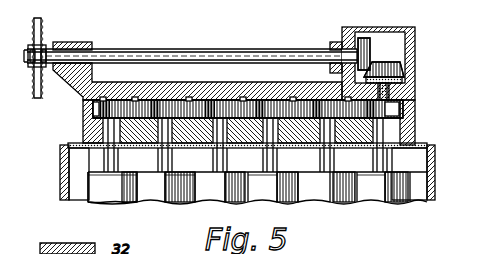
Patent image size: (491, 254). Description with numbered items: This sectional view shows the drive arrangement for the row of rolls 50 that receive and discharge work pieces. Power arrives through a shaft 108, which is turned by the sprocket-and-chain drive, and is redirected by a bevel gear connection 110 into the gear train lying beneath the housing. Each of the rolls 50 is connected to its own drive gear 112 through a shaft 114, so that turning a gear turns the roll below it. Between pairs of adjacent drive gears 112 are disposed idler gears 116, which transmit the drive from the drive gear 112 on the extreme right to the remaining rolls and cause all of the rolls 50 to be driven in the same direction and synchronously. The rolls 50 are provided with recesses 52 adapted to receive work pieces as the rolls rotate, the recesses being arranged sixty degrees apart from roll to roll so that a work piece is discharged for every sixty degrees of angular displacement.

The shaft 108 is at (116, 50).
The bevel gear connection 110 is at (400, 62).
The drive gear 112 is at (95, 108).
The idler gears 116 is at (112, 130).
The recesses 52 is at (88, 200).
The shaft 114 is at (135, 178).
The rolls 50 is at (130, 200).